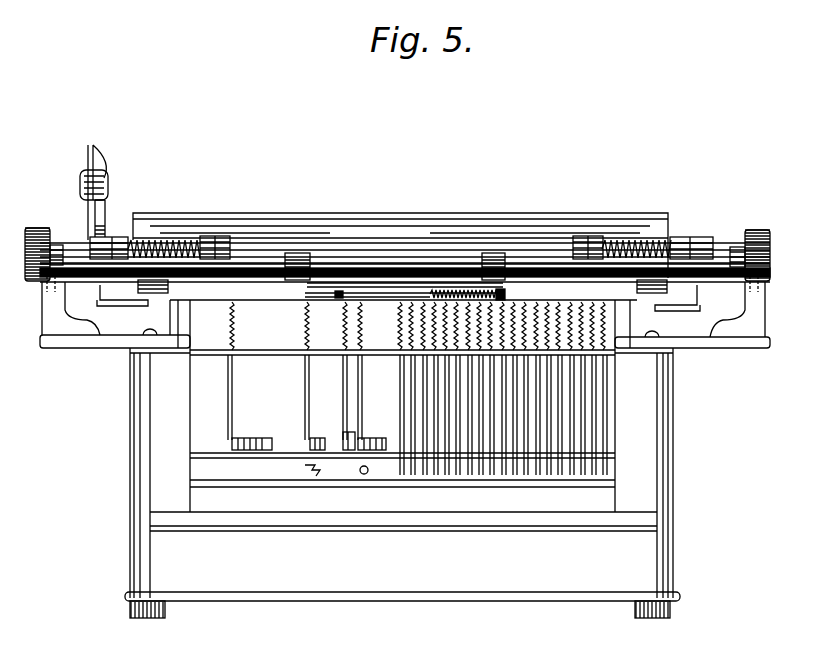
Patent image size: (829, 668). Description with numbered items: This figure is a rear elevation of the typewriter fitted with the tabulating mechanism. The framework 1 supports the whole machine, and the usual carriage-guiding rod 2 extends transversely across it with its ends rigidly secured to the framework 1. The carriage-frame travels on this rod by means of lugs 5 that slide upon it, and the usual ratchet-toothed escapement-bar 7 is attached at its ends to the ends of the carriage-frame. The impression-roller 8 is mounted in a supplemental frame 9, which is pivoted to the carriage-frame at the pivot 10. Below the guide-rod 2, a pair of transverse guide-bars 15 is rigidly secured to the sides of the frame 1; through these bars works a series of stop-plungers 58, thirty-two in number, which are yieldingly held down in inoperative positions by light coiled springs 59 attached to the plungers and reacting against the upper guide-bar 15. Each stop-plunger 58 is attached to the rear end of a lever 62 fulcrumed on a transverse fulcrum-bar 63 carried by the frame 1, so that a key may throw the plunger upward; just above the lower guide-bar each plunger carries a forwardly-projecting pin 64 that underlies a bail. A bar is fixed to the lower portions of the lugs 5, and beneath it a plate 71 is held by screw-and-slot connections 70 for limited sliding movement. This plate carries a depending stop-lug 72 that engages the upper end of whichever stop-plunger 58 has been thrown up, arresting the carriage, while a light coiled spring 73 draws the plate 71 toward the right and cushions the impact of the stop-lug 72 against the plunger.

The framework 1 is at (150, 446).
The carriage-guiding rod 2 is at (238, 272).
The lugs 5 is at (294, 262).
The ratchet-toothed escapement-bar 7 is at (136, 306).
The impression-roller 8 is at (187, 222).
The supplemental frame 9 is at (90, 240).
The pivot 10 is at (541, 250).
The guide-bars 15 is at (257, 357).
The stop-plungers 58 is at (233, 400).
The coiled springs 59 is at (230, 322).
The levers 62 is at (240, 451).
The fulcrum-bars 63 is at (252, 438).
The pin 64 is at (452, 292).
The screw-and-slot connections 70 is at (342, 285).
The sliding plate 71 is at (415, 295).
The stop-lug 72 is at (338, 298).
The coiled spring 73 is at (505, 298).